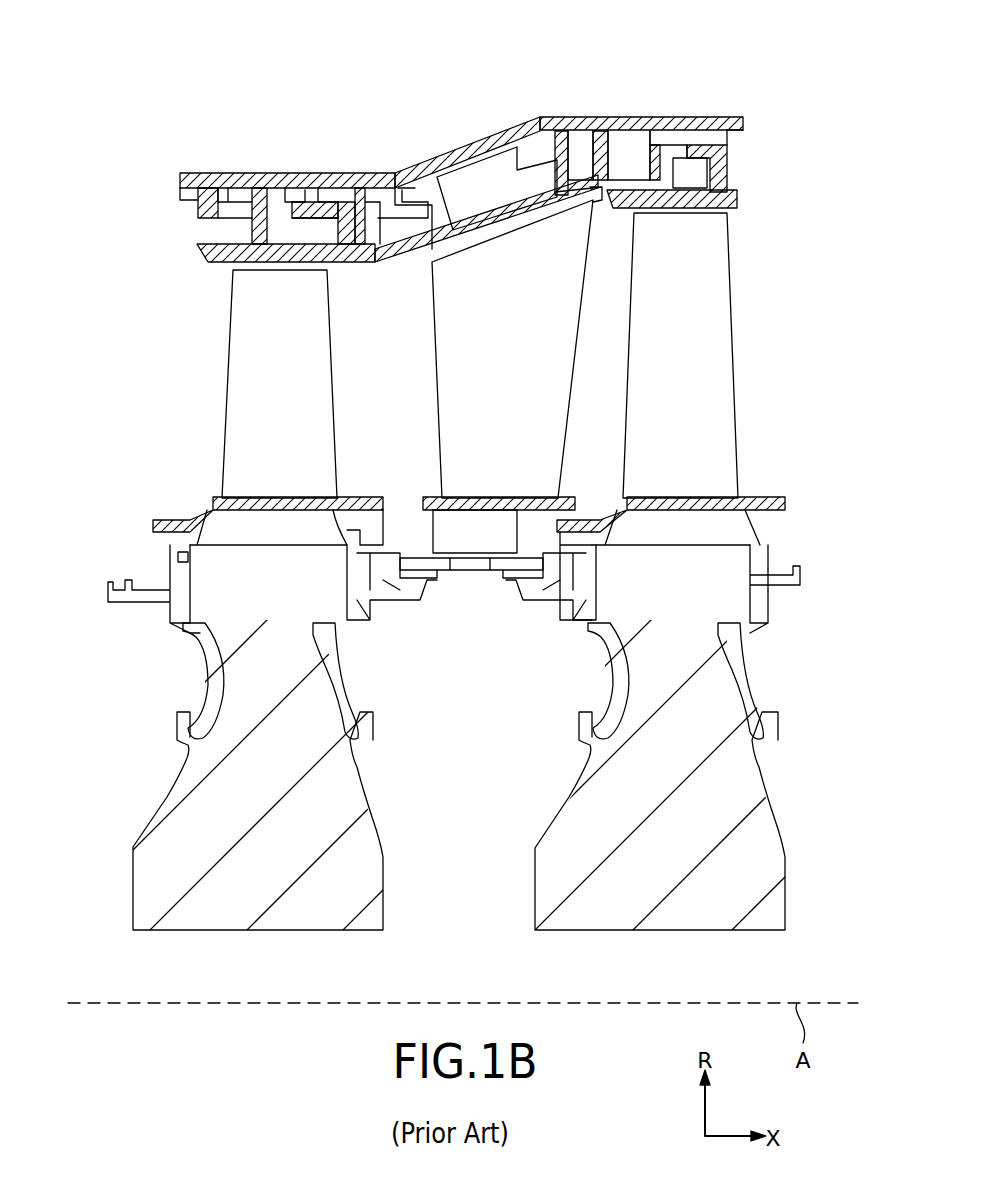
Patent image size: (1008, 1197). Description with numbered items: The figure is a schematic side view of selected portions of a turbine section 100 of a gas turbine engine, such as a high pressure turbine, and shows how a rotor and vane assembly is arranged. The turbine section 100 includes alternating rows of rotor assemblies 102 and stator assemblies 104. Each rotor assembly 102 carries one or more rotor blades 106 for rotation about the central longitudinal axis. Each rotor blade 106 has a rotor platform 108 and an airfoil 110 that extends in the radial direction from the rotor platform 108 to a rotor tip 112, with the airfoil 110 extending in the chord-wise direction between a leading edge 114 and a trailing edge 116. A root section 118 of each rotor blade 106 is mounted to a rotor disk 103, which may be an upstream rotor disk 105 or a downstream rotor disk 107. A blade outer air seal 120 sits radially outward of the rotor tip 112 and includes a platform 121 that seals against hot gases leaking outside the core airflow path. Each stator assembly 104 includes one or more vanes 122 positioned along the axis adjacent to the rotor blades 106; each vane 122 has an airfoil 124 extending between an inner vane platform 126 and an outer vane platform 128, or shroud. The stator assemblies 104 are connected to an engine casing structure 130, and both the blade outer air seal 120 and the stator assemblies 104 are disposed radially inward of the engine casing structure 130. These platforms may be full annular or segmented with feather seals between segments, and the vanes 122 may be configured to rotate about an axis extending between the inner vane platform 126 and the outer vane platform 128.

The turbine section 100 is at (183, 69).
The rotor assembly 102 is at (130, 855).
The rotor disk 103 is at (366, 793).
The stator assembly 104 is at (568, 353).
The upstream rotor disk 105 is at (378, 828).
The rotor blade 106 is at (274, 400).
The downstream rotor disk 107 is at (763, 776).
The rotor platform 108 is at (786, 503).
The airfoil 110 is at (733, 347).
The rotor tip 112 is at (232, 270).
The leading edge 114 is at (229, 322).
The trailing edge 116 is at (331, 318).
The root section 118 is at (215, 525).
The blade outer air seal 120 is at (745, 195).
The platform 121 is at (750, 209).
The vane 122 is at (492, 405).
The airfoil 124 is at (572, 393).
The inner vane platform 126 is at (548, 496).
The outer vane platform 128 is at (597, 206).
The engine casing structure 130 is at (745, 121).